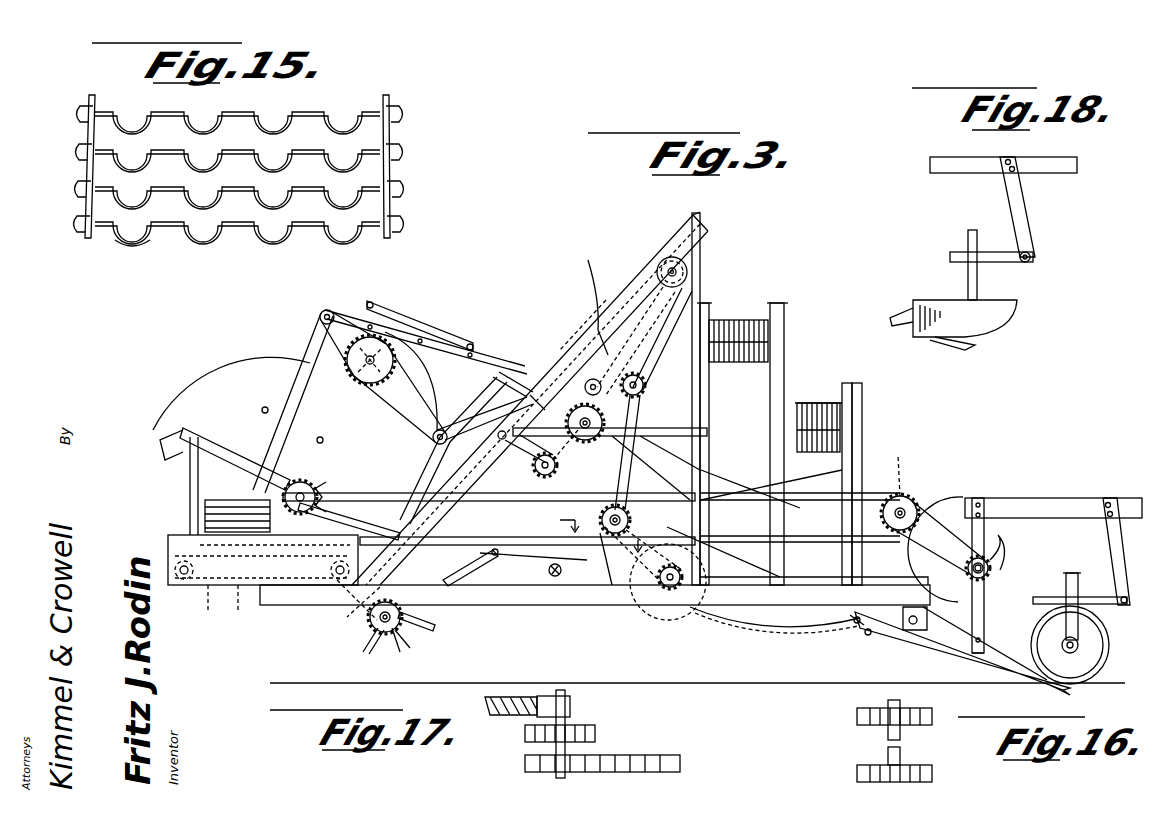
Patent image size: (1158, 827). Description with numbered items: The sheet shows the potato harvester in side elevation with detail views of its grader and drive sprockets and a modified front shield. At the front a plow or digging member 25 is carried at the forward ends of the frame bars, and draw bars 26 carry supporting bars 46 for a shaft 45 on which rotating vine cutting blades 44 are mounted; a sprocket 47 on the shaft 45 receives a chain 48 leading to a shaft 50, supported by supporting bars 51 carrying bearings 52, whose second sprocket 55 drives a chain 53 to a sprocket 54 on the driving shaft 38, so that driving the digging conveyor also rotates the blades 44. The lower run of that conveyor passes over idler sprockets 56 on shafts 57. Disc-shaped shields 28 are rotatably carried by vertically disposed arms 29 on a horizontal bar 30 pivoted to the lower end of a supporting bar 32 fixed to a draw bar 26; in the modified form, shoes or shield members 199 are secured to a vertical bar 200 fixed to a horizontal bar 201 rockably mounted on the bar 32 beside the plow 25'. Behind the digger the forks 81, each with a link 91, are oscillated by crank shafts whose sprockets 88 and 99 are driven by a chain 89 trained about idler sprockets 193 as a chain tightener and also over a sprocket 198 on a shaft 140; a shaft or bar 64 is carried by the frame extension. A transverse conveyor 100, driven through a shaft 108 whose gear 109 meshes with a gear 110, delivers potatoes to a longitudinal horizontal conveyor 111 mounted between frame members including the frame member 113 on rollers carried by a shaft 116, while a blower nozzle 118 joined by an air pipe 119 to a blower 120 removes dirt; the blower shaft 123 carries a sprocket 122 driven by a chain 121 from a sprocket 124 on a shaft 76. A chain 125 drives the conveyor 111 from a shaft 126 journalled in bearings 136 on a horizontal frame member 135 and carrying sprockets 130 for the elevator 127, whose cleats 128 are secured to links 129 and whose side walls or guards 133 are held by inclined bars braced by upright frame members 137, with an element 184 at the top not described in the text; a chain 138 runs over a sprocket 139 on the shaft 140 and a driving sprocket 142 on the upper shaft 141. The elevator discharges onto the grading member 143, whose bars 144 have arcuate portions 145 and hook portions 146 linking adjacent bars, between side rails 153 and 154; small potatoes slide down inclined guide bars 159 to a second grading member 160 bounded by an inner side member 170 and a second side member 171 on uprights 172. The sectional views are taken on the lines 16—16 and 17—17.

In FIG. 15, the hook portions 146 is at (394, 205).
In FIG. 15, the grading bars or links 144 is at (173, 228).
In FIG. 15, the arcuate portions 145 is at (140, 245).
In FIG. 18, the supporting bar 32 is at (1022, 229).
In FIG. 3, the supporting bar 32 is at (1125, 565).
In FIG. 18, the horizontal bar 201 is at (989, 252).
In FIG. 18, the vertical bar 200 is at (977, 282).
In FIG. 18, the shoes or shield members 199 is at (1000, 318).
In FIG. 18, the plow or digging member 25' is at (932, 347).
In FIG. 17, the shaft 38 is at (555, 750).
In FIG. 3, the shaft 38 is at (583, 586).
In FIG. 17, the chain 89 is at (595, 732).
In FIG. 16, the chain 89 is at (857, 717).
In FIG. 3, the chain 89 is at (315, 322).
In FIG. 17, the chain 53 is at (660, 772).
In FIG. 3, the chain 53 is at (815, 535).
In FIG. 16, the sprocket member 198 is at (888, 708).
In FIG. 16, the shaft 140 is at (888, 752).
In FIG. 3, the shaft 140 is at (551, 472).
In FIG. 3, the sprockets 130 is at (595, 591).
In FIG. 3, the frame member 113 is at (180, 585).
In FIG. 3, the longitudinal horizontal conveyor 111 is at (198, 608).
In FIG. 3, the blower nozzle 118 is at (235, 613).
In FIG. 3, the transverse conveyor 100 is at (233, 515).
In FIG. 3, the shaft or bar 64 is at (170, 445).
In FIG. 3, the shaft 108 is at (372, 493).
In FIG. 3, the gear 110 is at (305, 480).
In FIG. 3, the gear 109 is at (325, 488).
In FIG. 3, the sprocket 99 is at (353, 372).
In FIG. 3, the idler sprockets 193 is at (318, 348).
In FIG. 3, the forks 81 is at (425, 368).
In FIG. 3, the link 91 is at (425, 320).
In FIG. 3, the side walls or guards 133 is at (688, 216).
In FIG. 3, the tube end 184 is at (712, 228).
In FIG. 3, the chain 138 is at (592, 297).
In FIG. 3, the sprocket 139 is at (579, 327).
In FIG. 3, the section line 16— 16 is at (536, 391).
In FIG. 3, the driving sprocket 142 is at (636, 341).
In FIG. 3, the shaft 141 is at (687, 270).
In FIG. 3, the upright frame members 137 is at (701, 400).
In FIG. 3, the side rail 153 is at (711, 310).
In FIG. 3, the movable grading member 143 is at (755, 320).
In FIG. 3, the side rail 154 is at (784, 306).
In FIG. 3, the sprocket 124 is at (600, 412).
In FIG. 3, the shaft 76 is at (642, 378).
In FIG. 3, the shaft 116 is at (656, 455).
In FIG. 3, the inclined guide bars 159 is at (800, 405).
In FIG. 3, the second grading member 160 is at (825, 403).
In FIG. 3, the second side member 171 is at (857, 390).
In FIG. 3, the uprights 172 is at (862, 423).
In FIG. 3, the inner side member 170 is at (752, 405).
In FIG. 3, the sprocket 88 is at (525, 461).
In FIG. 3, the air pipe 119 is at (510, 545).
In FIG. 3, the section line 17— 17 is at (593, 537).
In FIG. 3, the sprocket 54 is at (600, 528).
In FIG. 3, the horizontal frame member 135 is at (590, 590).
In FIG. 3, the chain 121 is at (640, 585).
In FIG. 3, the blower 120 is at (665, 625).
In FIG. 3, the blower shaft 123 is at (672, 588).
In FIG. 3, the sprocket 122 is at (775, 607).
In FIG. 3, the chain 125 is at (372, 628).
In FIG. 3, the bearings 136 is at (355, 632).
In FIG. 3, the shaft 126 is at (372, 650).
In FIG. 3, the bars or links 129 is at (393, 643).
In FIG. 3, the elevator 127 is at (405, 650).
In FIG. 3, the cleats 128 is at (437, 635).
In FIG. 3, the second sprocket 55 is at (870, 506).
In FIG. 3, the shaft 50 is at (905, 508).
In FIG. 3, the bearings 52 is at (896, 465).
In FIG. 3, the supporting bars 51 is at (935, 497).
In FIG. 3, the shaft 45 is at (990, 568).
In FIG. 3, the sprocket 47 is at (988, 578).
In FIG. 3, the rotating vine cutting blades 44 is at (1000, 555).
In FIG. 3, the supporting bars 46 is at (985, 520).
In FIG. 3, the chain 48 is at (950, 610).
In FIG. 3, the draw bars 26 is at (1070, 498).
In FIG. 3, the horizontal bar 30 is at (1095, 597).
In FIG. 3, the vertically disposed arms 29 is at (1065, 622).
In FIG. 3, the disc-shaped shields 28 is at (1107, 650).
In FIG. 3, the idler sprockets 56 is at (852, 625).
In FIG. 3, the shafts 57 is at (868, 636).
In FIG. 3, the plow or digging member 25 is at (1055, 700).